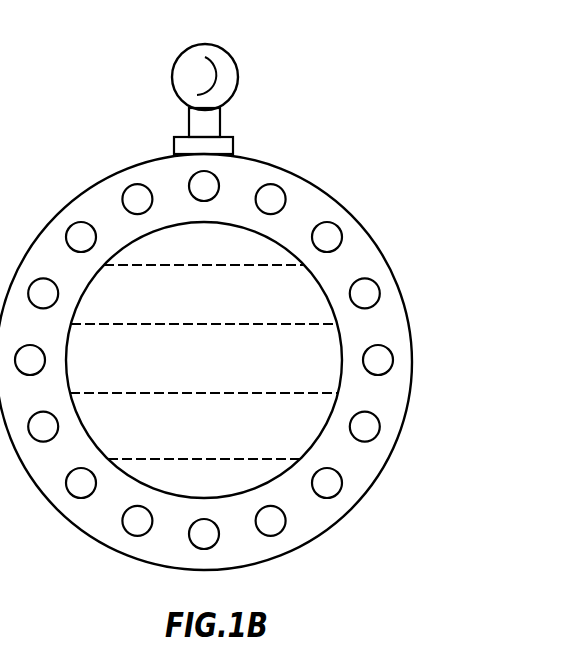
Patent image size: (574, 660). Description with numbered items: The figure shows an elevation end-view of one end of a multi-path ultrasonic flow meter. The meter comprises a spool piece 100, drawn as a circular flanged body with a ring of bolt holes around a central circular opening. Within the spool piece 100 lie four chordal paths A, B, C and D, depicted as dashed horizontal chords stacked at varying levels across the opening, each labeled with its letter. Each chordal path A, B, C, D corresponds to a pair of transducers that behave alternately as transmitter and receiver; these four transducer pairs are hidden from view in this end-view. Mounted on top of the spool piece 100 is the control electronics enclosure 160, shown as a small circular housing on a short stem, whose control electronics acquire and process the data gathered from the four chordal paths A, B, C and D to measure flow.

The spool piece 100 is at (243, 362).
The control electronics enclosure 160 is at (239, 80).
The chordal path A is at (204, 249).
The chordal path B is at (204, 310).
The chordal path C is at (204, 378).
The chordal path D is at (204, 444).